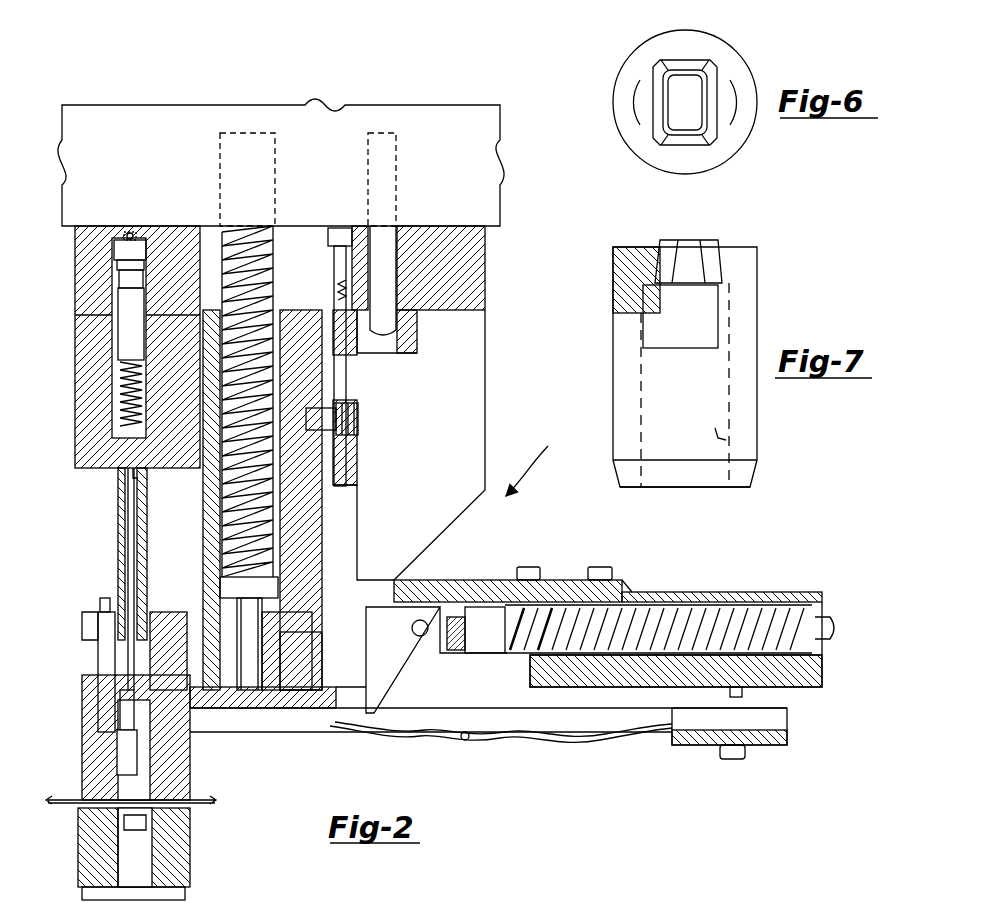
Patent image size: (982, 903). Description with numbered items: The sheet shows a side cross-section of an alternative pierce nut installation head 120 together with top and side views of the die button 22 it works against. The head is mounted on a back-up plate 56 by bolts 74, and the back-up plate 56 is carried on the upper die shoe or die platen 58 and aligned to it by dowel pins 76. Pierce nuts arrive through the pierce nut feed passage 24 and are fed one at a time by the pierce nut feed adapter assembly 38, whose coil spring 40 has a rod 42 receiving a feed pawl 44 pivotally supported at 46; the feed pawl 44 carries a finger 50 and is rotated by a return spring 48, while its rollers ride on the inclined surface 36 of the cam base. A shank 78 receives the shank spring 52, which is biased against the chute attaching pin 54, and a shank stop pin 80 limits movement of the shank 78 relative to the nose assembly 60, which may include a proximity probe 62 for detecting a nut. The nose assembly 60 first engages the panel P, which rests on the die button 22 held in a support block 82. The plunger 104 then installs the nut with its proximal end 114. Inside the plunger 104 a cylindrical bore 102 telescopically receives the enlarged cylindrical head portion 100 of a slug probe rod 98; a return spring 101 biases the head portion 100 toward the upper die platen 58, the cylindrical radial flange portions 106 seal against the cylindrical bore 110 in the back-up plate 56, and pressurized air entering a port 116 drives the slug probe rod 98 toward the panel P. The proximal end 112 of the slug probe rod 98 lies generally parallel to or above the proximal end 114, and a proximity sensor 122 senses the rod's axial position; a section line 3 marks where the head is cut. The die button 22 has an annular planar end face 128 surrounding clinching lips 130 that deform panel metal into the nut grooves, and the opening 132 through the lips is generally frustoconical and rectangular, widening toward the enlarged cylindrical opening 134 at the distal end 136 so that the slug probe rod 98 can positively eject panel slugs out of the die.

In FIG. 2, the section line 3 is at (180, 185).
In FIG. 2, the die button 22 is at (112, 850).
In FIG. 6, the die button 22 is at (718, 30).
In FIG. 7, the die button 22 is at (611, 370).
In FIG. 2, the pierce nut feed passage 24 is at (288, 712).
In FIG. 2, the inclined surface 36 is at (458, 518).
In FIG. 2, the pierce nut feed adapter assembly 38 is at (626, 598).
In FIG. 2, the coil spring 40 is at (722, 612).
In FIG. 2, the rod 42 is at (832, 628).
In FIG. 2, the feed pawl 44 is at (380, 698).
In FIG. 2, the pivot 46 is at (412, 628).
In FIG. 2, the return spring 48 is at (462, 644).
In FIG. 2, the finger 50 is at (443, 594).
In FIG. 2, the shank spring 52 is at (242, 242).
In FIG. 2, the chute attaching pin 54 is at (250, 640).
In FIG. 2, the back-up plate 56 is at (478, 262).
In FIG. 2, the upper die shoe or die platen 58 is at (330, 145).
In FIG. 2, the nose assembly 60 is at (86, 784).
In FIG. 2, the proximity probe 62 is at (106, 668).
In FIG. 2, the bolts 74 is at (336, 270).
In FIG. 2, the dowel pins 76 is at (383, 240).
In FIG. 2, the shank 78 is at (298, 522).
In FIG. 2, the shank stop pin 80 is at (338, 420).
In FIG. 2, the support block 82 is at (190, 840).
In FIG. 2, the slug probe rod 98 is at (128, 604).
In FIG. 2, the enlarged cylindrical head portion 100 is at (126, 345).
In FIG. 2, the return spring 101 is at (140, 478).
In FIG. 2, the cylindrical bore 102 is at (106, 440).
In FIG. 2, the plunger 104 is at (120, 538).
In FIG. 2, the cylindrical radial flange portions 106 is at (142, 265).
In FIG. 2, the cylindrical bore 110 is at (126, 280).
In FIG. 2, the proximal end 112 is at (122, 702).
In FIG. 2, the proximal end 114 is at (172, 710).
In FIG. 2, the port 116 is at (130, 236).
In FIG. 2, the pierce nut installation head 120 is at (546, 457).
In FIG. 2, the proximity sensor 122 is at (523, 812).
In FIG. 6, the annular planar end face 128 is at (738, 135).
In FIG. 7, the annular planar end face 128 is at (752, 240).
In FIG. 6, the clinching lips 130 is at (683, 143).
In FIG. 7, the clinching lips 130 is at (716, 238).
In FIG. 7, the opening 132 is at (665, 270).
In FIG. 7, the enlarged cylindrical opening 134 is at (718, 430).
In FIG. 7, the distal end 136 is at (740, 487).
In FIG. 2, the panel P is at (212, 802).